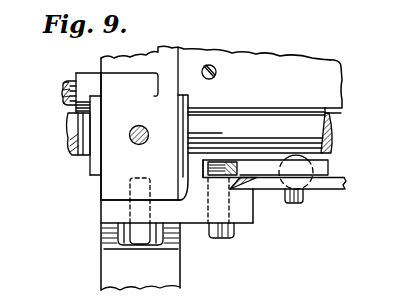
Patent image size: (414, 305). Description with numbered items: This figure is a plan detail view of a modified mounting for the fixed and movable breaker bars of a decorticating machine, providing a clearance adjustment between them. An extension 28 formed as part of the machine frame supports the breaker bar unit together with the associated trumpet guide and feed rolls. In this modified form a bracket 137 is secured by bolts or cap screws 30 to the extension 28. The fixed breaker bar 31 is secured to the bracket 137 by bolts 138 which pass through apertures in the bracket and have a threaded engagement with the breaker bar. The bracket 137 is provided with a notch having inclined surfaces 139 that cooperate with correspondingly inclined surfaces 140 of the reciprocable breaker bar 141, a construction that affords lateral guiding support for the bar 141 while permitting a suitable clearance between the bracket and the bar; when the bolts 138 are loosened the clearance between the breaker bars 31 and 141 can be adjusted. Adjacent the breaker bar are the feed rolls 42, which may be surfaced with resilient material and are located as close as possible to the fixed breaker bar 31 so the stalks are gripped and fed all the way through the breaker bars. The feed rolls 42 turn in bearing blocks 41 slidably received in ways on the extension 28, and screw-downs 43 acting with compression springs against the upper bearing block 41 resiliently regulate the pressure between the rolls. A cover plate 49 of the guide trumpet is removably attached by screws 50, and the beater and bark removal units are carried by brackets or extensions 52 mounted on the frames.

The cover plate 49 is at (332, 83).
The screws 50 is at (217, 73).
The screw-downs 43 is at (133, 126).
The feed rolls 42 is at (317, 124).
The bearing blocks 41 is at (97, 159).
The extension 28 is at (110, 177).
The bracket 137 is at (107, 212).
The cap screws 30 is at (122, 230).
The brackets or extensions 52 is at (115, 269).
The fixed breaker bar 31 is at (330, 170).
The reciprocable breaker bar 141 is at (334, 189).
The inclined surfaces 140 is at (257, 185).
The inclined surfaces 139 is at (238, 183).
The bolts 138 is at (222, 236).